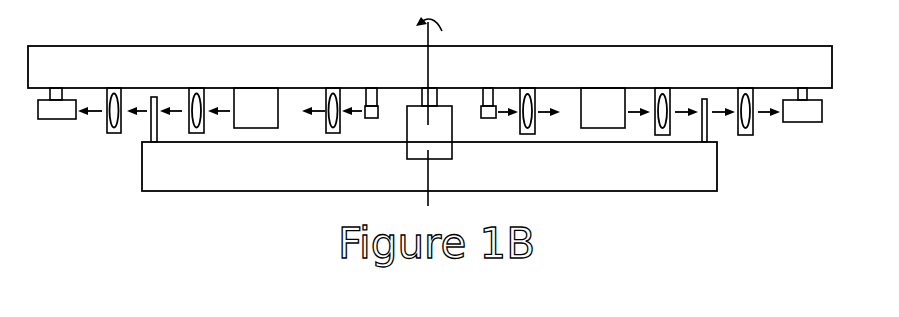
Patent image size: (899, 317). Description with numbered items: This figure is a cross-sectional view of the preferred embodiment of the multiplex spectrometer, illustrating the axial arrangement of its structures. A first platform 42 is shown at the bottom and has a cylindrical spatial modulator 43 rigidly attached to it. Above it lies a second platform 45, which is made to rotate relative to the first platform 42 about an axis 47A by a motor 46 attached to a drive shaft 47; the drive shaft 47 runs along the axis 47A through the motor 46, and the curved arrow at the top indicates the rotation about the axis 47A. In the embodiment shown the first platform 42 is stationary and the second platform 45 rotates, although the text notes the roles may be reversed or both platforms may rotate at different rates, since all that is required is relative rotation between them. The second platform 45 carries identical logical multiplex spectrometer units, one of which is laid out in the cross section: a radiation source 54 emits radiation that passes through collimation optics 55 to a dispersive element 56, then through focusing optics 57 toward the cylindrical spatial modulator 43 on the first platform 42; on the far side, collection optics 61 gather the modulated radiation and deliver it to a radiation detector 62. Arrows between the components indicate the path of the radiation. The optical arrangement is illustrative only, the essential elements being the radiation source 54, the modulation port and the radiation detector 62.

The first platform 42 is at (207, 170).
The cylindrical spatial modulator 43 is at (712, 127).
The second platform 45 is at (162, 68).
The motor 46 is at (429, 114).
The drive shaft 47 is at (422, 98).
The axis 47A is at (454, 30).
The radiation source 54 is at (489, 118).
The collimation optics 55 is at (535, 125).
The dispersive element 56 is at (605, 118).
The focusing optics 57 is at (658, 130).
The collection optics 61 is at (753, 122).
The radiation detector 62 is at (805, 121).